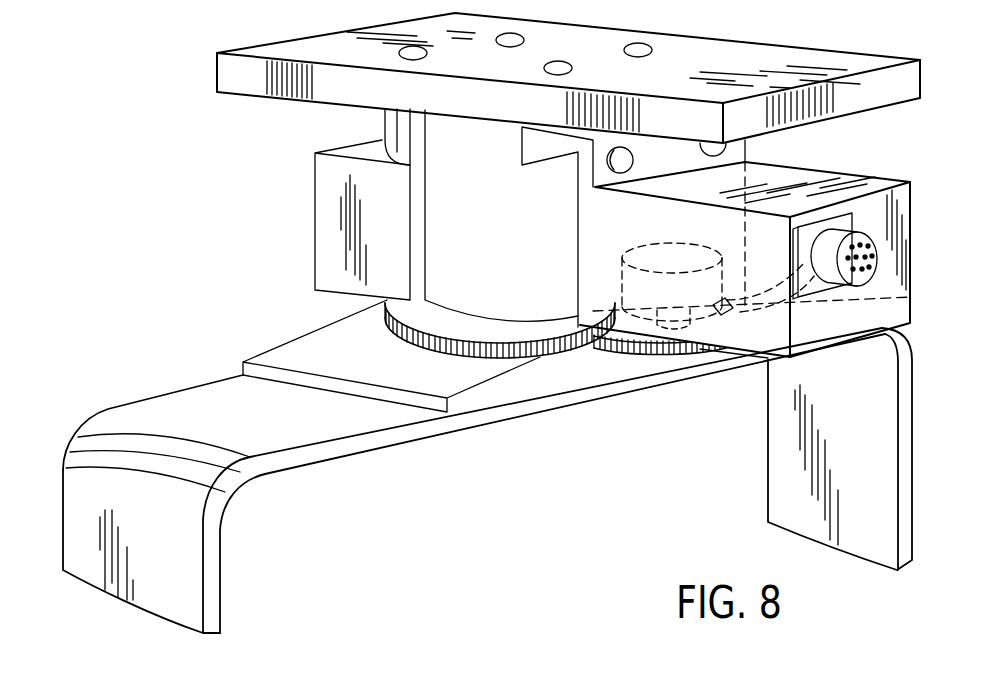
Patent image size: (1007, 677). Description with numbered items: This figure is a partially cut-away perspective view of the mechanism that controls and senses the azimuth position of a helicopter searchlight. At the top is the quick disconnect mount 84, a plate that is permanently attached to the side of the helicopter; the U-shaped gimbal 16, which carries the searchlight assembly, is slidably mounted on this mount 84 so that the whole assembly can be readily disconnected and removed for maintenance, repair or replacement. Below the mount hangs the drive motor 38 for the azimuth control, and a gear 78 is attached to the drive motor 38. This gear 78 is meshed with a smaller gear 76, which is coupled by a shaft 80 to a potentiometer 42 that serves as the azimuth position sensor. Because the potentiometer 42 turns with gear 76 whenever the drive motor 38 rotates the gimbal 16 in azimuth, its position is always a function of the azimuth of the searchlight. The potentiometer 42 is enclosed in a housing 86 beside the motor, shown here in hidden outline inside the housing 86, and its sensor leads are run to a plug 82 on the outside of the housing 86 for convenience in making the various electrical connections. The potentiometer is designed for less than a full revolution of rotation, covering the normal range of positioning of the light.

The gimbal 16 is at (385, 438).
The drive motor 38 is at (437, 296).
The potentiometer 42 is at (640, 248).
The gear 76 is at (660, 357).
The gear 78 is at (540, 353).
The shaft 80 is at (683, 323).
The plug 82 is at (857, 280).
The quick disconnect mount 84 is at (788, 52).
The housing 86 is at (843, 182).